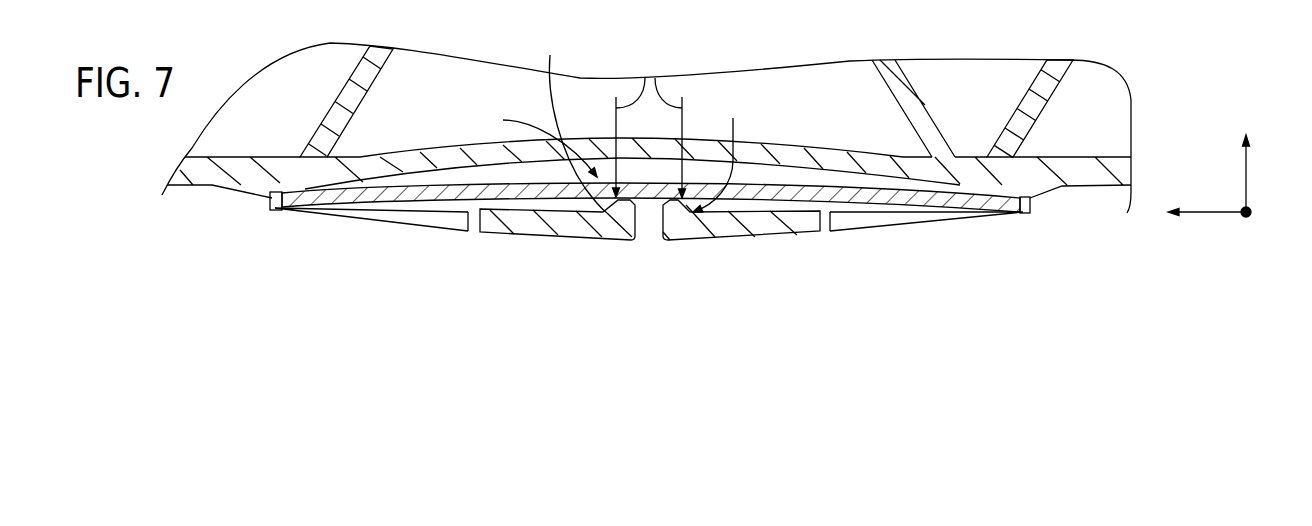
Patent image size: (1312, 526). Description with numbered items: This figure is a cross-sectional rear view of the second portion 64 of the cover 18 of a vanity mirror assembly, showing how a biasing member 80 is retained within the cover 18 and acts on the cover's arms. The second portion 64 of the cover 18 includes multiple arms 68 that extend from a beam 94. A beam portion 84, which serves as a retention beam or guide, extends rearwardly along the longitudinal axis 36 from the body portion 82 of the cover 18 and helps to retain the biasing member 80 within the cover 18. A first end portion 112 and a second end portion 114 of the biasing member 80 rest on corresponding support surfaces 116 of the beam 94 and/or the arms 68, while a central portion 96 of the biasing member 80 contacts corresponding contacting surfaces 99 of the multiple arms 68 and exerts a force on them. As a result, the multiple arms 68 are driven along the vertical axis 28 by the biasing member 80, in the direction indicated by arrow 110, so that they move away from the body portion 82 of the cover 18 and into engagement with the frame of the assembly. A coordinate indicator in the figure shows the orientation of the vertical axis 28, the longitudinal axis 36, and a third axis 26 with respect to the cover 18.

The cover 18 is at (1152, 56).
The axial direction 26 is at (1217, 211).
The vertical axis 28 is at (1247, 183).
The longitudinal axis 36 is at (1252, 218).
The second portion 64 is at (498, 245).
The arms 68 is at (547, 223).
The biasing member 80 is at (358, 188).
The body portion 82 is at (1092, 90).
The beam portion 84 is at (772, 153).
The beam 94 is at (1105, 173).
The central portion 96 is at (572, 121).
The contacting surfaces 99 is at (609, 152).
The arrow 110 is at (655, 78).
The first end portion 112 is at (275, 210).
The second end portion 114 is at (1025, 213).
The support surfaces 116 is at (302, 192).